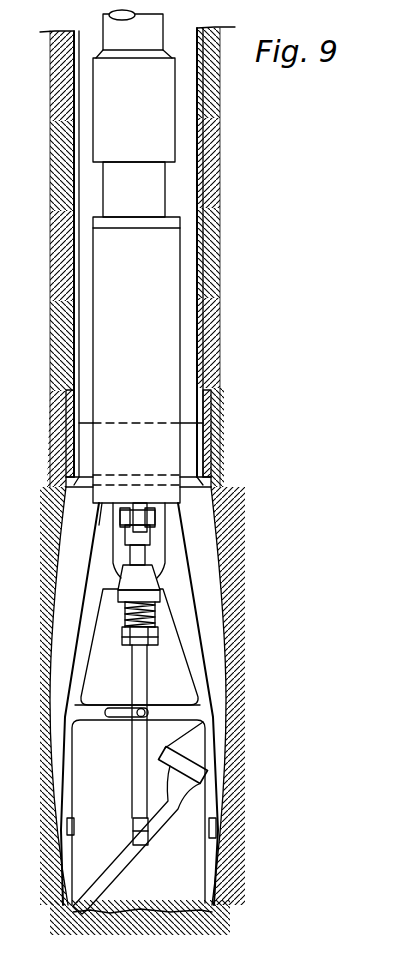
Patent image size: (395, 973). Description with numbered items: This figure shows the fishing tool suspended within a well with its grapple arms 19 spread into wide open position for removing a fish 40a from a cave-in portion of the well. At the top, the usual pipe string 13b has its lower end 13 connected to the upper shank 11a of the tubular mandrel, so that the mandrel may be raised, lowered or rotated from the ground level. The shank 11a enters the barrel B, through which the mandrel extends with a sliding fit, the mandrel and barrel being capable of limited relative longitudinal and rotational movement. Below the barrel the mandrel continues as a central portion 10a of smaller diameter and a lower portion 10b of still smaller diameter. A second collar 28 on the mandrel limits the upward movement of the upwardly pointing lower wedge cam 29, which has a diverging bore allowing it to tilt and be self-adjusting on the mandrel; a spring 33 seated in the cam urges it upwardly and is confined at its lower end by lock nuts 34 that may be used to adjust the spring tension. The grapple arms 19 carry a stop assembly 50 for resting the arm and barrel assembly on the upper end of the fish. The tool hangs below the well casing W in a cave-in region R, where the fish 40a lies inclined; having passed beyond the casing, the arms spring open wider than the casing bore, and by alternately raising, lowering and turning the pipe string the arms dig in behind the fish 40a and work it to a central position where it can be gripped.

The pipe string 13b is at (134, 34).
The lower end of pipe string 13 is at (134, 110).
The upper shank of mandrel 11a is at (134, 189).
The barrel B is at (136, 360).
The well casing W is at (142, 257).
The cave-in region R is at (147, 711).
The second collar 28 is at (150, 536).
The central portion of mandrel 10a is at (137, 552).
The lower wedge cam 29 is at (139, 583).
The spring 33 is at (125, 626).
The lock nuts 34 is at (158, 638).
The grapple arms 19 is at (78, 681).
The stop assembly 50 is at (117, 722).
The lower portion of mandrel 10b is at (138, 768).
The fish 40a is at (158, 804).